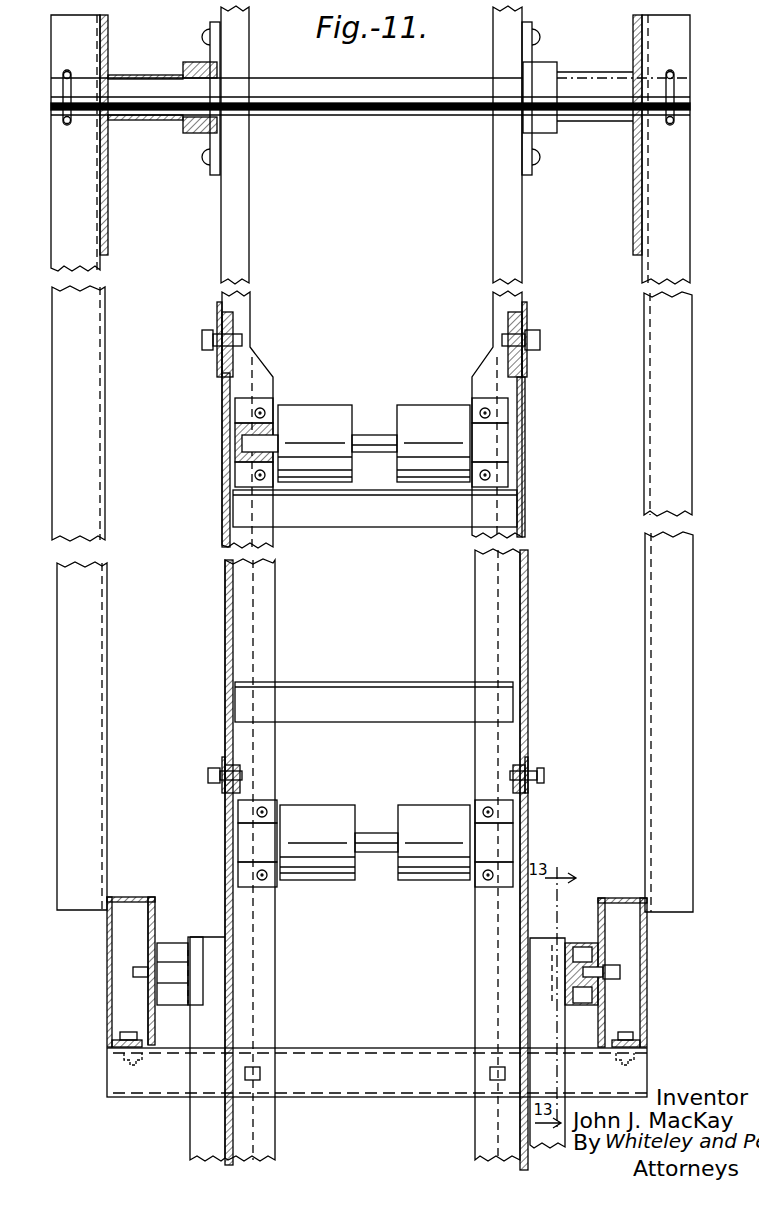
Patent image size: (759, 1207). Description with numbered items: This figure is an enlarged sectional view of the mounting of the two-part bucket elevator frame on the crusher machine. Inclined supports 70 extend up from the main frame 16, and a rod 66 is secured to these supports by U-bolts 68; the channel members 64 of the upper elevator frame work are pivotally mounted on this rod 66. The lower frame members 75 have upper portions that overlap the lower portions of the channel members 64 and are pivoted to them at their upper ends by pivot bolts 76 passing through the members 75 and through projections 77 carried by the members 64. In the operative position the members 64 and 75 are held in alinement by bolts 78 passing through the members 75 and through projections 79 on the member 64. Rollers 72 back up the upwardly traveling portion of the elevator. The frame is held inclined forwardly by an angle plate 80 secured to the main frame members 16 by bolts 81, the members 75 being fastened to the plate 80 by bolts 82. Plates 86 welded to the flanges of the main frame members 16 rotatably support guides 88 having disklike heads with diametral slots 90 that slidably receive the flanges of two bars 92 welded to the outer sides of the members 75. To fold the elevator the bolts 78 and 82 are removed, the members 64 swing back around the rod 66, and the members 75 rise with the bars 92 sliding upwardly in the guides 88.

The main frame 16 is at (107, 955).
The channel members 64 is at (238, 206).
The rod 66 is at (318, 84).
The U-bolts 68 is at (63, 74).
The inclined supports 70 is at (92, 580).
The rollers 72 is at (338, 418).
The frame members 75 is at (252, 618).
The pivot bolts 76 is at (204, 346).
The projections 77 is at (217, 310).
The bolts 78 is at (208, 775).
The projections 79 is at (222, 757).
The angle plate 80 is at (115, 1080).
The bolts 81 is at (115, 1035).
The bolts 82 is at (261, 1073).
The plates 86 is at (150, 897).
The guides 88 is at (170, 943).
The diametral slots 90 is at (190, 957).
The bars 92 is at (200, 1133).